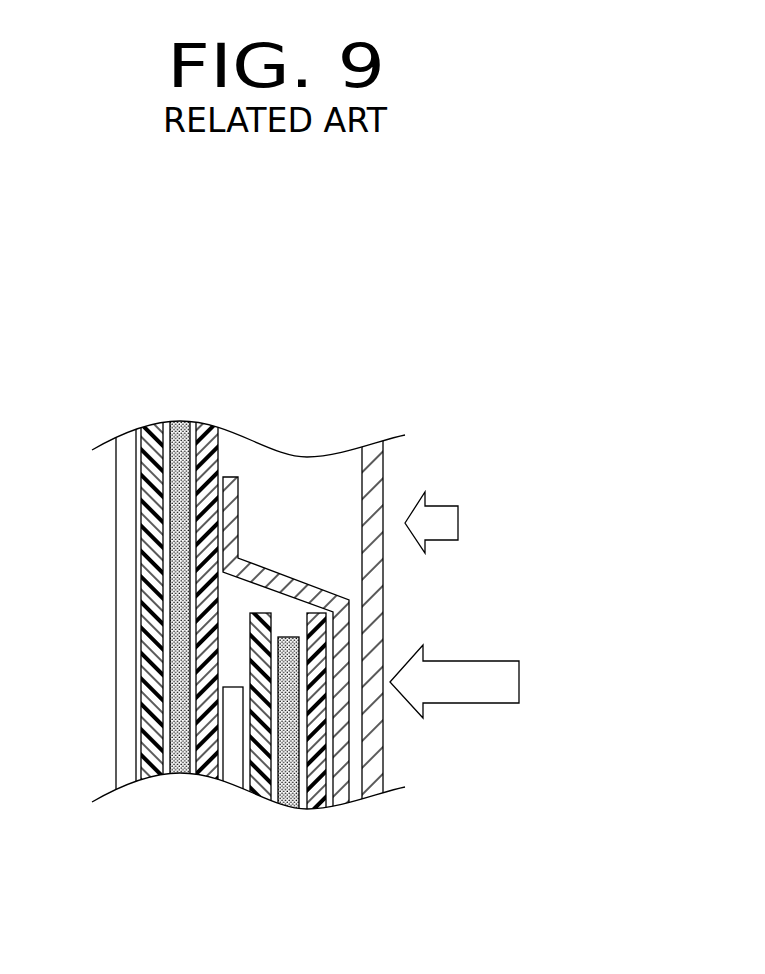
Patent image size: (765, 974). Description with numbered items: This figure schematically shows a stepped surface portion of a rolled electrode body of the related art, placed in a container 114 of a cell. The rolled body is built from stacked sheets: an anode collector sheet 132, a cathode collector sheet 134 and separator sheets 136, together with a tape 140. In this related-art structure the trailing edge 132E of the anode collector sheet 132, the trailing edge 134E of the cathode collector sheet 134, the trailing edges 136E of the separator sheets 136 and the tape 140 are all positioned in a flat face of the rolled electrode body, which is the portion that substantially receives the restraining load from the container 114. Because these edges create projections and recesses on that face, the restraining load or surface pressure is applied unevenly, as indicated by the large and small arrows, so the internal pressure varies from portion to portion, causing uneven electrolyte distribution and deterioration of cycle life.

The container 114 is at (386, 480).
The anode collector sheet 132 is at (123, 778).
The cathode collector sheet 134 is at (172, 775).
The separator sheets 136 is at (152, 772).
The tape 140 is at (235, 476).
The trailing edge of anode collector sheet 132E is at (231, 693).
The trailing edge of cathode collector sheet 134E is at (288, 636).
The trailing edges of separator sheets 136E is at (260, 612).